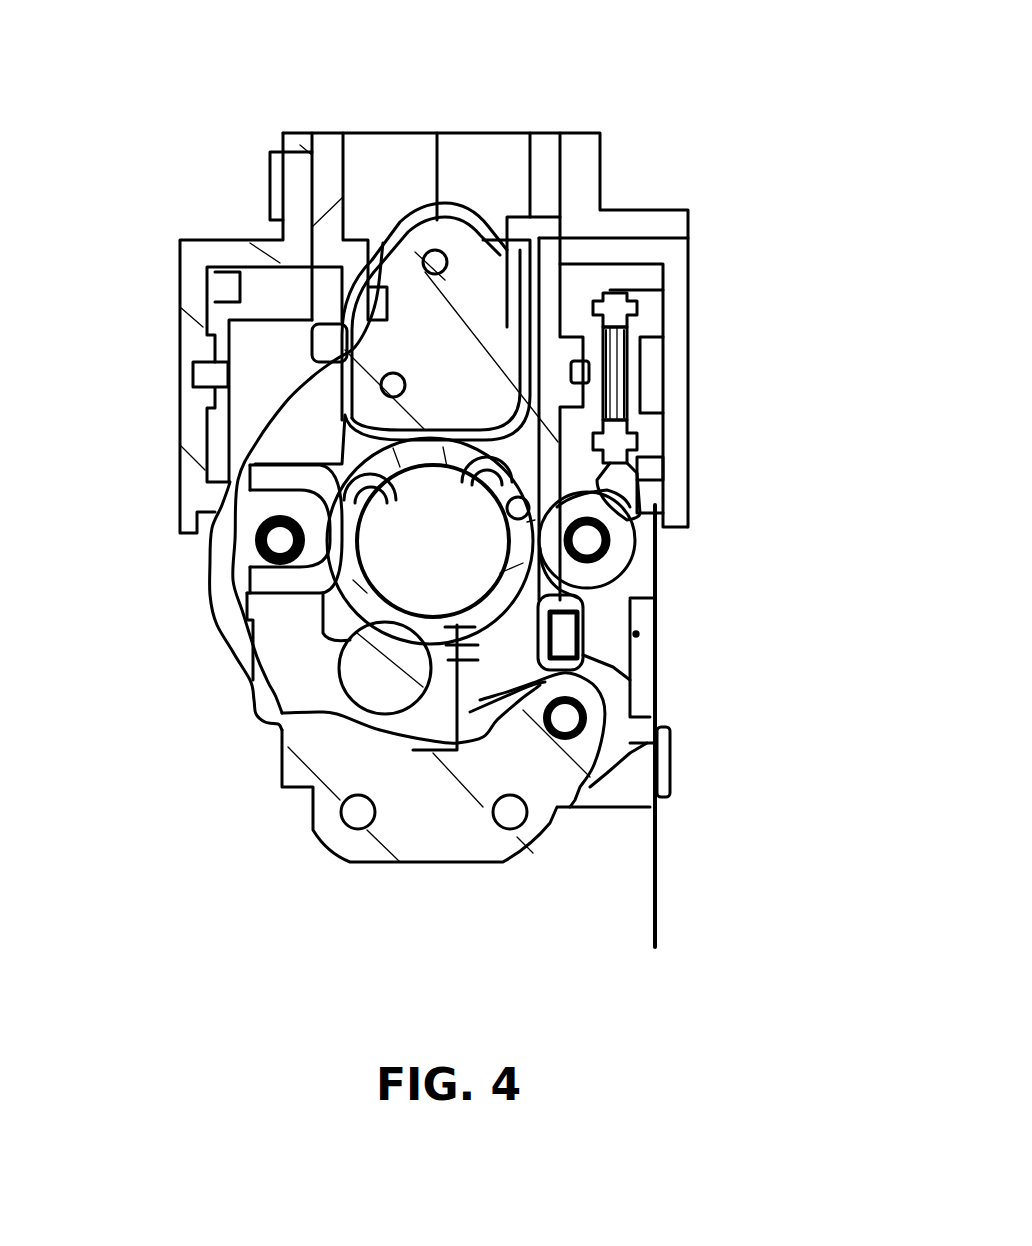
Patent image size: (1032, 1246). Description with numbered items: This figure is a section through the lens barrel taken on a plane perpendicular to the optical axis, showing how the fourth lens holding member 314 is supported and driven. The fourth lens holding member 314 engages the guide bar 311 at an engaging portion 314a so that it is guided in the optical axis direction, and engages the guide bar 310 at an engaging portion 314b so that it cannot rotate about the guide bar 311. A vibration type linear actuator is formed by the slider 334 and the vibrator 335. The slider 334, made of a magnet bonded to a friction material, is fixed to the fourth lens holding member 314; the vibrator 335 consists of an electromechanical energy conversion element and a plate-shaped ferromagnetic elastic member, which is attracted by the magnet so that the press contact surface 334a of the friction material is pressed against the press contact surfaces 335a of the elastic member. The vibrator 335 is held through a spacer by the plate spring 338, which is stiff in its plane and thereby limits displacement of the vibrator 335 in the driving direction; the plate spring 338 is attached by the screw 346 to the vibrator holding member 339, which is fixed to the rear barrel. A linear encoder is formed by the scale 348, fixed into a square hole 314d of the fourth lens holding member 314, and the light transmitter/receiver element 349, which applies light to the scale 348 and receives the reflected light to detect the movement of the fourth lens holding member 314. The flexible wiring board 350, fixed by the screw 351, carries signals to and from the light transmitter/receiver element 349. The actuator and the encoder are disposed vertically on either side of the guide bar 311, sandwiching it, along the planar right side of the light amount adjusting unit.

The fourth lens holding member 314 is at (543, 370).
The slider 334 is at (583, 368).
The screw 346 is at (640, 295).
The press contact surfaces 335a is at (615, 358).
The plate spring 338 is at (615, 368).
The vibrator 335 is at (615, 381).
The press contact surface 334a is at (615, 397).
The vibrator holding member 339 is at (675, 450).
The guide bar 311 is at (672, 527).
The engaging portion 314a is at (660, 590).
The light transmitter/receiver element 349 is at (642, 658).
The screw 351 is at (670, 757).
The flexible wiring board 350 is at (657, 873).
The guide bar 310 is at (280, 542).
The engaging portion 314b is at (275, 580).
The square hole 314d is at (547, 637).
The scale 348 is at (597, 700).